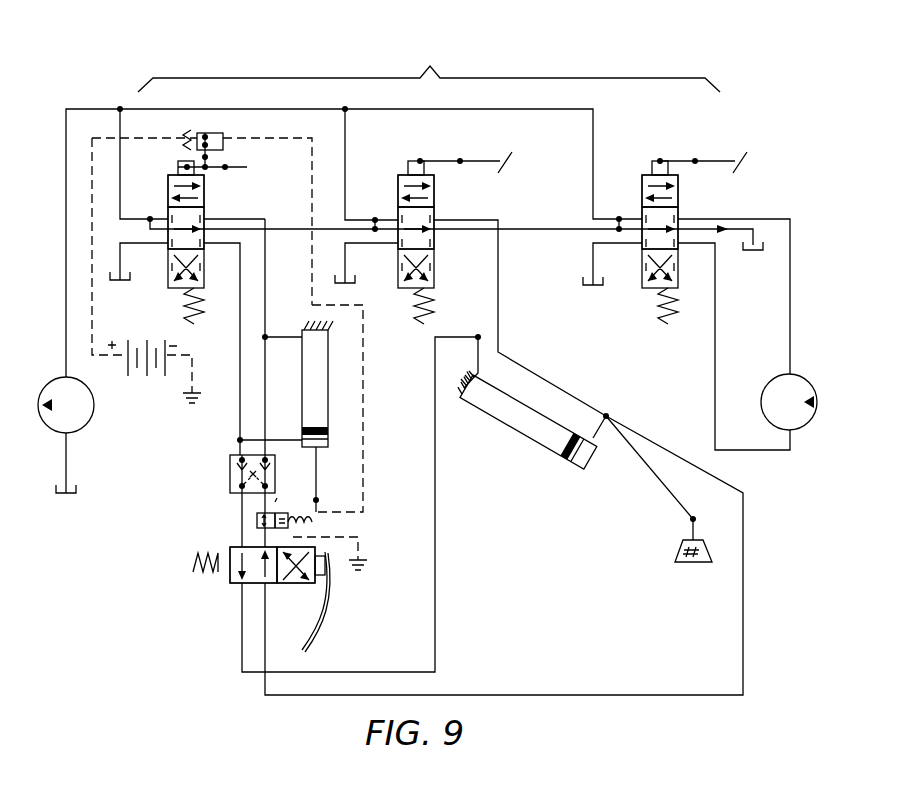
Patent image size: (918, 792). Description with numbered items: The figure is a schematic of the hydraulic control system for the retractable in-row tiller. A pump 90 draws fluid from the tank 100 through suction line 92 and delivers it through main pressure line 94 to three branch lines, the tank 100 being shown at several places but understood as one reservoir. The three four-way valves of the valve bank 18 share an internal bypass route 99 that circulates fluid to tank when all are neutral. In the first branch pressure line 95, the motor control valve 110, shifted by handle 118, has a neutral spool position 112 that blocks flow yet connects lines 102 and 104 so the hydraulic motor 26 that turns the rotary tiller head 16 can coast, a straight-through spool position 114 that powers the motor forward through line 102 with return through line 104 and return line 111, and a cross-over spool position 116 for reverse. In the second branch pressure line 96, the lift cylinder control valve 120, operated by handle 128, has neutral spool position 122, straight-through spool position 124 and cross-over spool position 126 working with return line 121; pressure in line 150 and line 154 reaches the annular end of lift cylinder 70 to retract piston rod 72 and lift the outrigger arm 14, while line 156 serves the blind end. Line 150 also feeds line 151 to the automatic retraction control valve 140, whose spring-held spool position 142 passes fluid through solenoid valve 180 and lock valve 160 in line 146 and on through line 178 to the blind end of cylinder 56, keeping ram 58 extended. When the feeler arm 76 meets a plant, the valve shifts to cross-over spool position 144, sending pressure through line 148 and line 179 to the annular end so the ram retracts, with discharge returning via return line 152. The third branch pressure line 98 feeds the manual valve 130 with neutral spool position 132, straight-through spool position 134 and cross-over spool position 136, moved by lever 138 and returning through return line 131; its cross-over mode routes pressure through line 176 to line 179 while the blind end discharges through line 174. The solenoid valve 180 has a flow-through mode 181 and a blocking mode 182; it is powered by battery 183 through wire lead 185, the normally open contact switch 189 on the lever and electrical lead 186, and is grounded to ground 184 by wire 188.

The valve bank 18 is at (429, 66).
The main pressure line 94 is at (66, 246).
The pump 90 is at (83, 428).
The suction line 92 is at (67, 463).
The tank 100 is at (72, 498).
The third branch pressure line 98 is at (120, 142).
The extension and retraction cylinder control valve 130 is at (174, 150).
The spool position 136 is at (208, 272).
The spool position 134 is at (207, 190).
The spool position 132 is at (208, 217).
The contact switch 189 is at (225, 136).
The lever 138 is at (251, 178).
The return line 131 is at (121, 270).
The wire lead 185 is at (92, 305).
The battery 183 is at (151, 387).
The ground 184 is at (197, 395).
The second branch pressure line 96 is at (346, 159).
The lift cylinder control valve 120 is at (420, 155).
The spool position 126 is at (436, 272).
The handle 128 is at (469, 159).
The spool position 124 is at (434, 194).
The spool position 122 is at (436, 216).
The internal bypass route 99 is at (298, 234).
The return line 121 is at (346, 268).
The line 174 is at (271, 309).
The line 176 is at (240, 420).
The line 178 is at (288, 338).
The line 179 is at (290, 421).
The extension and retraction cylinder 56 is at (330, 387).
The ram 58 is at (318, 478).
The electrical lead 186 is at (365, 405).
The lock valve 160 is at (224, 469).
The spool mode 181 is at (277, 500).
The spool mode 182 is at (276, 514).
The line 146 is at (263, 503).
The line 148 is at (241, 527).
The solenoid valve 180 is at (322, 523).
The wire 188 is at (359, 537).
The automatic retraction control valve 140 is at (184, 576).
The spool position 142 is at (238, 583).
The spool position 144 is at (298, 587).
The feeler arm 76 is at (322, 628).
The return line 152 is at (410, 672).
The line 151 is at (646, 693).
The line 156 is at (476, 354).
The line 150 is at (568, 392).
The lift cylinder 70 is at (537, 445).
The line 154 is at (603, 432).
The piston rod 72 is at (653, 498).
The outrigger arm 14 is at (683, 543).
The rotary tiller head 16 is at (670, 550).
The first branch pressure line 95 is at (594, 143).
The motor control valve 110 is at (665, 152).
The spool position 116 is at (684, 272).
The handle 118 is at (707, 158).
The spool position 114 is at (678, 192).
The spool position 112 is at (679, 217).
The return line 111 is at (593, 266).
The line 104 is at (716, 318).
The line 102 is at (794, 316).
The hydraulic motor 26 is at (771, 378).